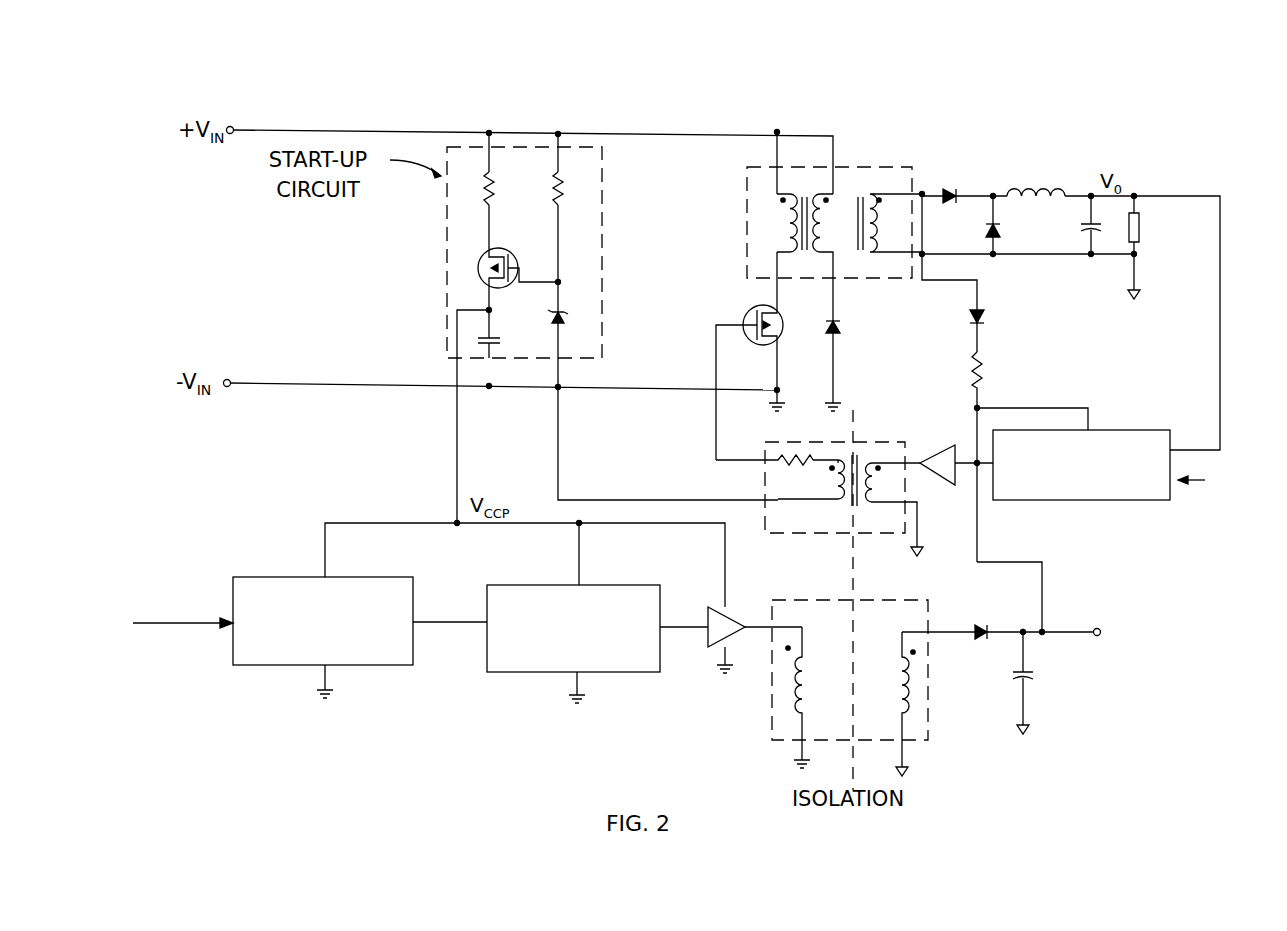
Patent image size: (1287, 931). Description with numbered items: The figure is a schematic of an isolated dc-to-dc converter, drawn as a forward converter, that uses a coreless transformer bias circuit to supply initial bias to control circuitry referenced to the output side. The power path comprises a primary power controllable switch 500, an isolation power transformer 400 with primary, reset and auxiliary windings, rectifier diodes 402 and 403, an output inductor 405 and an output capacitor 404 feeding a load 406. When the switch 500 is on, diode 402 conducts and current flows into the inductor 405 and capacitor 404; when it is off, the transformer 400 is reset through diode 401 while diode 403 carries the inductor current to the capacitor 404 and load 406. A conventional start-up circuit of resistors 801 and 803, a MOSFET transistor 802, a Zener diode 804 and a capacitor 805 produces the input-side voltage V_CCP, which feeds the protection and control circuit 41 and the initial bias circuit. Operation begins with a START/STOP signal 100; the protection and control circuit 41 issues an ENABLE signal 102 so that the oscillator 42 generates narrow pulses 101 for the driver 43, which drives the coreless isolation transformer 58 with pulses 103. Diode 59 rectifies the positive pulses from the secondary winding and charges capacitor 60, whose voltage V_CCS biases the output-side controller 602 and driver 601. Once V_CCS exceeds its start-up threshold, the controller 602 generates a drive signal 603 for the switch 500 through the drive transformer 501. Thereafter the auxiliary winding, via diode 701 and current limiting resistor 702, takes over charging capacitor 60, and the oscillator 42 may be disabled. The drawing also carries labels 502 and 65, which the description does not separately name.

The protection and control circuit 41 is at (285, 576).
The oscillator 42 is at (545, 584).
The driver 43 is at (722, 608).
The coreless isolation transformer 58 is at (870, 600).
The diode 59 is at (980, 630).
The capacitor 60 is at (1030, 682).
The secondary winding output line 65 is at (937, 630).
The START/STOP signal 100 is at (173, 625).
The pulses 101 is at (695, 630).
The ENABLE signal 102 is at (460, 624).
The pulses 103 is at (752, 626).
The isolation power transformer 400 is at (745, 213).
The diode 401 is at (840, 325).
The rectifier diode 402 is at (950, 190).
The rectifier diode 403 is at (986, 227).
The output capacitor 404 is at (1080, 227).
The output inductor 405 is at (1022, 190).
The load 406 is at (1140, 212).
The primary power controllable switch 500 is at (746, 325).
The drive transformer 501 is at (760, 472).
The gate drive transformer 502 is at (716, 440).
The driver 601 is at (943, 446).
The controller 602 is at (1115, 428).
The drive signal 603 is at (968, 466).
The diode 701 is at (988, 320).
The resistor 702 is at (986, 375).
The resistor 801 is at (483, 191).
The transistor 802 is at (480, 259).
The resistor 803 is at (567, 190).
The Zener diode 804 is at (570, 320).
The capacitor 805 is at (478, 336).